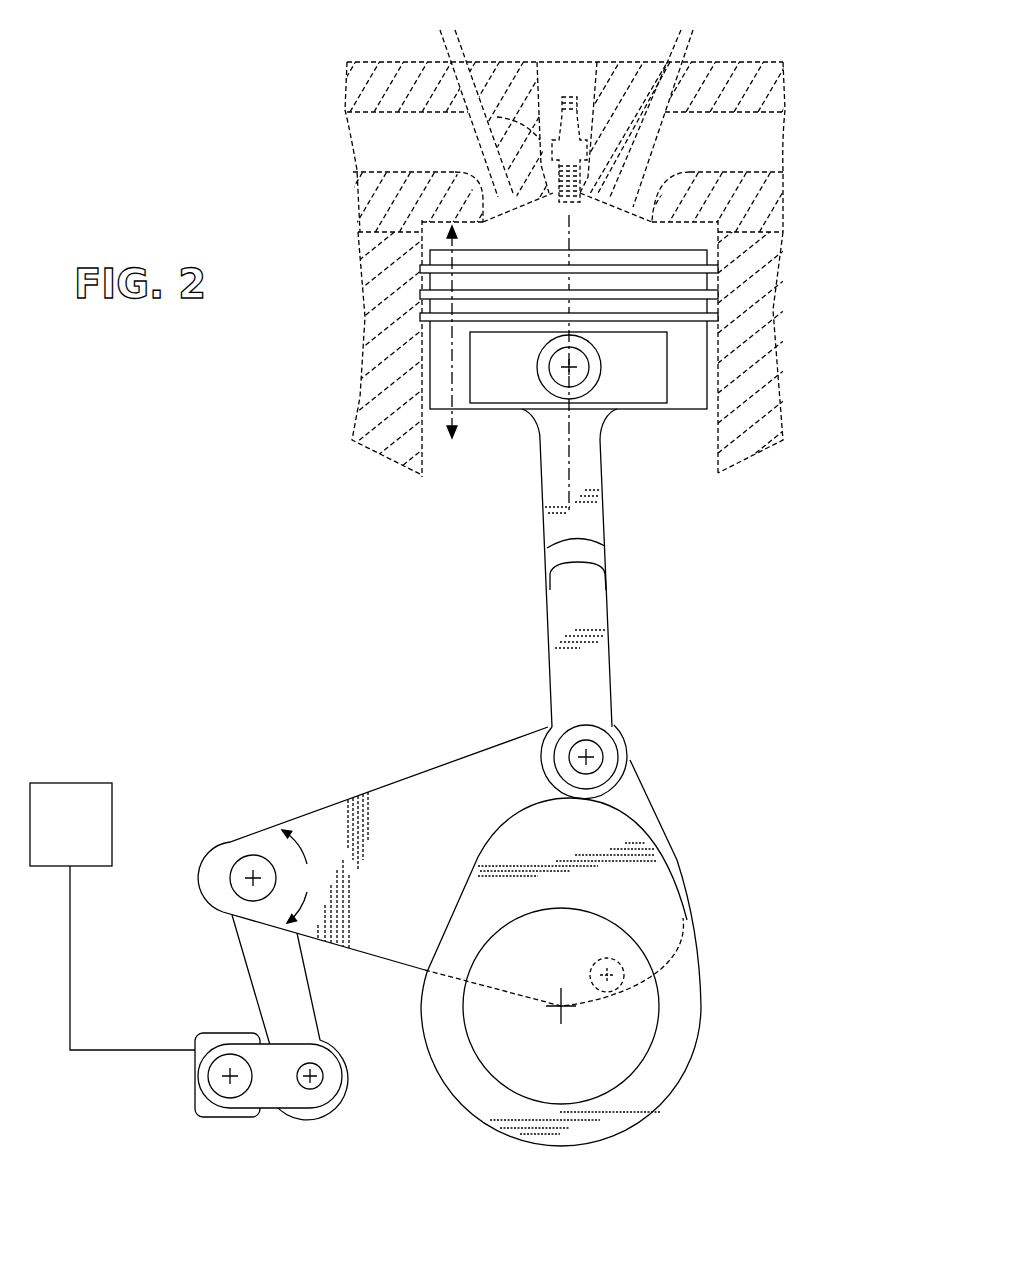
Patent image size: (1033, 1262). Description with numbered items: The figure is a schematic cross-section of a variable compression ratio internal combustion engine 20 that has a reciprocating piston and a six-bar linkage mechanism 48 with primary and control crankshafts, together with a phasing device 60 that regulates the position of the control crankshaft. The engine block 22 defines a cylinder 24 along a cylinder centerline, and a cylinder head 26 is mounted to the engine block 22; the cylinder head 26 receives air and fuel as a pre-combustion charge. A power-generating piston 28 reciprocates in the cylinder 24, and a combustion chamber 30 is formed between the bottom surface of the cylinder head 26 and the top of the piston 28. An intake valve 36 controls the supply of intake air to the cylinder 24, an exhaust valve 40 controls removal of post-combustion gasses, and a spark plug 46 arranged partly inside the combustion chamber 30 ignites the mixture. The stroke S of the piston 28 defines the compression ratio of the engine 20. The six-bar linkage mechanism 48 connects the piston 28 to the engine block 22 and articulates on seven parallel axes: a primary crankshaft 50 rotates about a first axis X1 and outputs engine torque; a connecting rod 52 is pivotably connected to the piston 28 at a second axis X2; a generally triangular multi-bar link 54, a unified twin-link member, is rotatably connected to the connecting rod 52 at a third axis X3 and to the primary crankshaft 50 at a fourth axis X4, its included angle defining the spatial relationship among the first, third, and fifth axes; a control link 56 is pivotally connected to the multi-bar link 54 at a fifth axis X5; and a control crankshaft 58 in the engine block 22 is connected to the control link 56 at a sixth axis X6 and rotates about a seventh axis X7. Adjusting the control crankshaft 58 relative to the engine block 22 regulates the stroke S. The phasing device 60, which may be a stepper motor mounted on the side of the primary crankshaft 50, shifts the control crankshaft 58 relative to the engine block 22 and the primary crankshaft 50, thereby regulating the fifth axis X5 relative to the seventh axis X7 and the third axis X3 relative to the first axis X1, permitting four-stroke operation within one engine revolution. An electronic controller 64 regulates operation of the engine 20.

The internal combustion engine 20 is at (642, 561).
The engine block 22 is at (567, 342).
The cylinder 24 is at (720, 290).
The cylinder head 26 is at (556, 147).
The piston 28 is at (640, 250).
The combustion chamber 30 is at (567, 351).
The intake valve 36 is at (505, 205).
The exhaust valve 40 is at (657, 200).
The spark plug 46 is at (555, 130).
The six-bar linkage mechanism 48 is at (298, 731).
The primary crankshaft 50 is at (668, 887).
The connecting rod 52 is at (553, 480).
The multi-bar link 54 is at (273, 1110).
The control link 56 is at (245, 968).
The control crankshaft 58 is at (472, 753).
The phasing device 60 is at (215, 1033).
The electronic controller 64 is at (112, 916).
The first axis X1 is at (565, 1008).
The second axis X2 is at (573, 365).
The third axis X3 is at (588, 756).
The fourth axis X4 is at (592, 972).
The fifth axis X5 is at (253, 877).
The sixth axis X6 is at (311, 1078).
The seventh axis X7 is at (230, 1077).
The stroke S is at (455, 417).